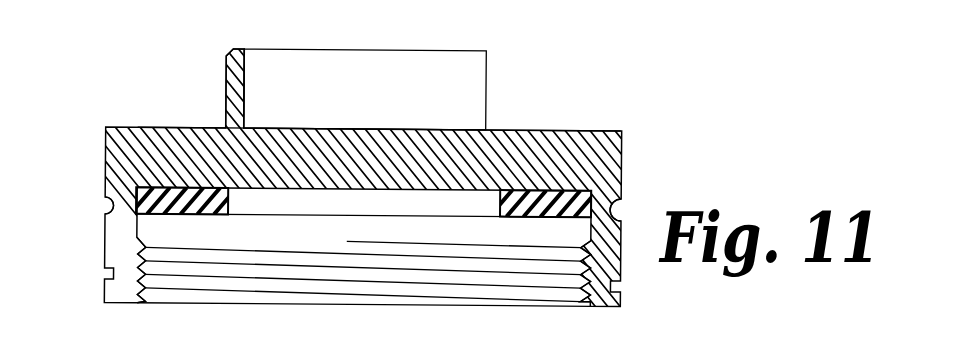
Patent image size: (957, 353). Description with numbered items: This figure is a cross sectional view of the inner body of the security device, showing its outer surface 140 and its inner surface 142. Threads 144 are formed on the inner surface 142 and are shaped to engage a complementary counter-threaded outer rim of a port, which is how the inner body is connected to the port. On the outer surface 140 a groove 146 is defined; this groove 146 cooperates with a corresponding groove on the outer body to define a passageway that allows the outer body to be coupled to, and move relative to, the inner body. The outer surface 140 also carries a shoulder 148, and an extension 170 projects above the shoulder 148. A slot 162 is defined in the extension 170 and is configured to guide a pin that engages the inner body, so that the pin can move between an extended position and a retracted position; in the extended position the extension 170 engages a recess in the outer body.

The outer surface 140 is at (143, 127).
The inner surface 142 is at (120, 217).
The threads 144 is at (107, 261).
The groove 146 is at (623, 208).
The shoulder 148 is at (172, 127).
The slot 162 is at (363, 128).
The extension 170 is at (225, 66).